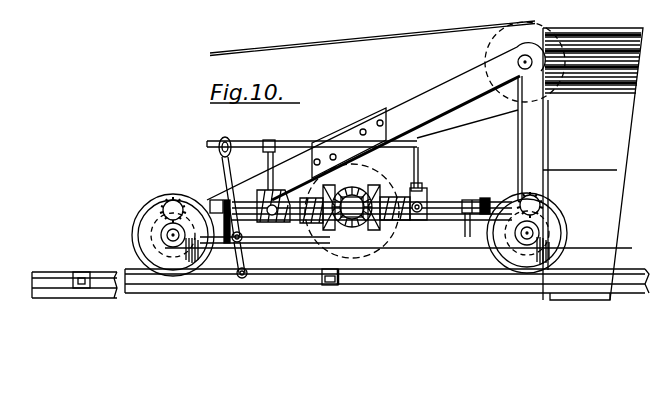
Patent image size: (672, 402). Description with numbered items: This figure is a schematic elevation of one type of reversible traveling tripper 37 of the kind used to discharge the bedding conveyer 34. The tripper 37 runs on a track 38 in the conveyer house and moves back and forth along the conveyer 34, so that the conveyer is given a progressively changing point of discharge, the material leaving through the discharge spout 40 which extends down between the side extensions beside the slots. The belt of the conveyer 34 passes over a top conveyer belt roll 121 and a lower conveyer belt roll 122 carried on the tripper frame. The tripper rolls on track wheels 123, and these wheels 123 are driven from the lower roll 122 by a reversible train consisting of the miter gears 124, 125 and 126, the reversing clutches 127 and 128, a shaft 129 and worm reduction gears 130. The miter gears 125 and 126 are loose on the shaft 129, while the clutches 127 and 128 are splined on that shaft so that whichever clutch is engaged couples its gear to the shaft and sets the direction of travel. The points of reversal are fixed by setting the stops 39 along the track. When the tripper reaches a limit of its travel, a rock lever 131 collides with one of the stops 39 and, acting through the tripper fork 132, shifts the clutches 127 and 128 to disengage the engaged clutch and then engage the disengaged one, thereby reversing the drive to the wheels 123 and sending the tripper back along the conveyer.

The bedding conveyer 34 is at (290, 49).
The reversible traveling tripper 37 is at (405, 99).
The track 38 is at (393, 276).
The stops 39 is at (88, 274).
The discharge spout 40 is at (607, 122).
The top conveyer belt roll 121 is at (497, 50).
The lower conveyer belt roll 122 is at (360, 177).
The track wheels 123 is at (148, 206).
The miter gear 124 is at (363, 233).
The miter gear 125 is at (322, 233).
The miter gear 126 is at (385, 188).
The reversing clutch 127 is at (277, 225).
The reversing clutch 128 is at (410, 218).
The shaft 129 is at (473, 198).
The worm reduction gears 130 is at (178, 198).
The rock lever 131 is at (220, 165).
The tripper fork 132 is at (293, 141).